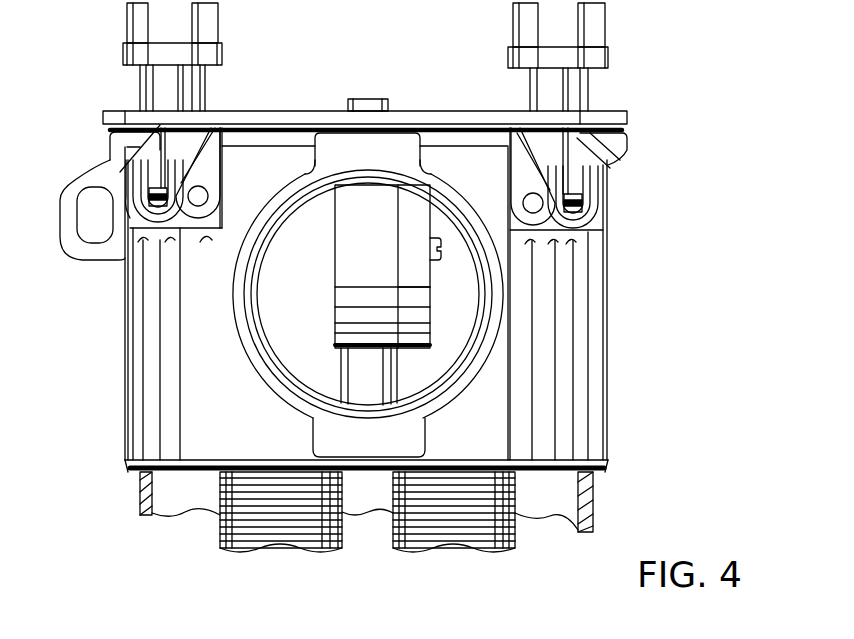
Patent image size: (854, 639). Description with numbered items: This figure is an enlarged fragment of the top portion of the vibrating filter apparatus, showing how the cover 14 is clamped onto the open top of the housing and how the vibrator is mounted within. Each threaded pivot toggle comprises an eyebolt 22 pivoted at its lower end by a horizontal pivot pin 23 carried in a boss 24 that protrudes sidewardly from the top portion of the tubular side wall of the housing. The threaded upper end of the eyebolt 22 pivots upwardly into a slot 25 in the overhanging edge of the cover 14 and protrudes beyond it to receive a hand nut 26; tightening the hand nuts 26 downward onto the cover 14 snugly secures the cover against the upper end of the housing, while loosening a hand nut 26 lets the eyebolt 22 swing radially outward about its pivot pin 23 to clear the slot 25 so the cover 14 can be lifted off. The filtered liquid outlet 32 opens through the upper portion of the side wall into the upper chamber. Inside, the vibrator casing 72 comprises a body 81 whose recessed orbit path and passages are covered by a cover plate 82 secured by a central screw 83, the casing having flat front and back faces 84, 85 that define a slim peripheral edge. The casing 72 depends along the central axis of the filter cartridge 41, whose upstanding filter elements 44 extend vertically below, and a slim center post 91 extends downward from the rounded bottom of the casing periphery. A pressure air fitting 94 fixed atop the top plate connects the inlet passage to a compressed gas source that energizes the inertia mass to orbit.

The cover 14 is at (473, 110).
The eyebolt 22 is at (110, 142).
The pivot pin 23 is at (199, 193).
The boss 24 is at (182, 188).
The slot 25 is at (135, 122).
The hand nut 26 is at (143, 80).
The filtered liquid outlet 32 is at (256, 328).
The filter cartridge 41 is at (366, 533).
The filter element 44 is at (220, 520).
The vibrator casing 72 is at (328, 304).
The body 81 is at (360, 243).
The cover plate 82 is at (412, 318).
The central screw 83 is at (440, 256).
The front face 84 is at (430, 288).
The back face 85 is at (335, 222).
The center post 91 is at (357, 383).
The pressure air fitting 94 is at (349, 105).